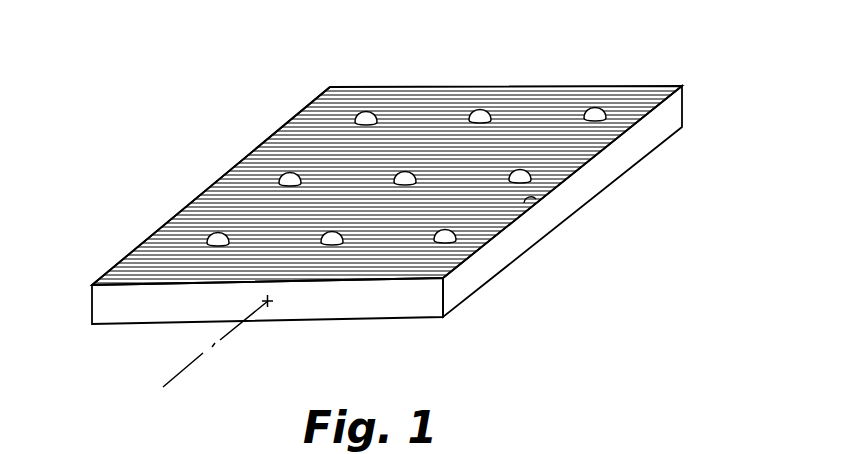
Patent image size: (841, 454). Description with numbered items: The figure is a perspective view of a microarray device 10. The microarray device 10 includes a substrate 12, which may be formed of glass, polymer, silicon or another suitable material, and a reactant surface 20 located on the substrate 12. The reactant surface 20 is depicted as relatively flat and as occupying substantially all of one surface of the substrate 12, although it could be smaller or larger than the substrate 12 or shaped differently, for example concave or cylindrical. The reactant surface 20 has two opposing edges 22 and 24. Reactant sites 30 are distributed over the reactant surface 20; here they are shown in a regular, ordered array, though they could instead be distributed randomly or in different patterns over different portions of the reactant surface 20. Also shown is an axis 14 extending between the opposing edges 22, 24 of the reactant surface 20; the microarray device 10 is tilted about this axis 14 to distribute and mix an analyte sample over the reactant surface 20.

The microarray device 10 is at (385, 209).
The substrate 12 is at (383, 305).
The axis 14 is at (192, 362).
The reactant surface 20 is at (603, 25).
The opposing edge 22 is at (537, 200).
The opposing edge 24 is at (230, 183).
The reactant sites 30 is at (473, 117).